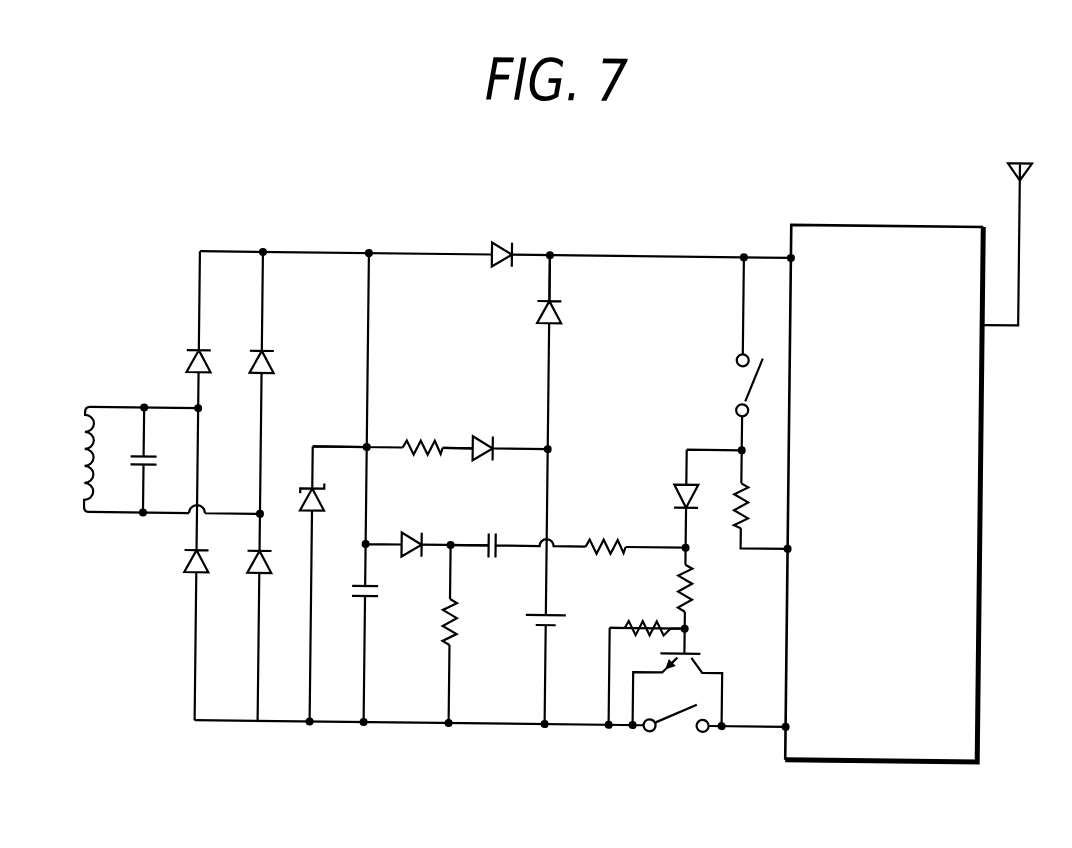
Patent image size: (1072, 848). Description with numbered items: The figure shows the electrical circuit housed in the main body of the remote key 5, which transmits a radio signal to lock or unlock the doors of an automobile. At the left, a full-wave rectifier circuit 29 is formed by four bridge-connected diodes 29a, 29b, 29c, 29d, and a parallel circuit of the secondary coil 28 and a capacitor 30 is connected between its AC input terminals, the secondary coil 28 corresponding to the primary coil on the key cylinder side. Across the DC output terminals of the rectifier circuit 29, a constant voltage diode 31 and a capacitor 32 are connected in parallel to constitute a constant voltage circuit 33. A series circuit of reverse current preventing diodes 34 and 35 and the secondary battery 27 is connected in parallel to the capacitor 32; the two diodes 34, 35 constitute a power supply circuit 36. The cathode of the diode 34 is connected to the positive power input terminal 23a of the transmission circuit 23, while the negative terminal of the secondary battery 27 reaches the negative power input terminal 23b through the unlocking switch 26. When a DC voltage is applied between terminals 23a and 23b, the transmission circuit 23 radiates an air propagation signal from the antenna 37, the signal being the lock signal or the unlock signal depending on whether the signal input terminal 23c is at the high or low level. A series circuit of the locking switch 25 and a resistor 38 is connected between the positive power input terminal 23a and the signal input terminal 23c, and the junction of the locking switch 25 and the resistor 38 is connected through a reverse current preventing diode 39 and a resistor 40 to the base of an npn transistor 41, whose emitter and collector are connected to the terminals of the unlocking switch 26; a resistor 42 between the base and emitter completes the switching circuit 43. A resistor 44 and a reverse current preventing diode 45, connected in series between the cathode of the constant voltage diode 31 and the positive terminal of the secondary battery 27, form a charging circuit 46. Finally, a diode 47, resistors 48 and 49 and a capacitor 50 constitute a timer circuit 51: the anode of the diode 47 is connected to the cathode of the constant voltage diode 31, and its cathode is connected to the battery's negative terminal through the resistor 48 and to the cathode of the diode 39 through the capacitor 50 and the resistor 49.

The remote key 5 is at (432, 733).
The transmission circuit 23 is at (872, 494).
The positive power input terminal 23a is at (789, 255).
The negative power input terminal 23b is at (789, 726).
The signal input terminal 23c is at (789, 548).
The locking switch 25 is at (747, 383).
The unlocking switch 26 is at (680, 708).
The secondary battery 27 is at (560, 623).
The secondary coil 28 is at (81, 492).
The full-wave rectifier circuit 29 is at (221, 443).
The diode 29a is at (190, 366).
The diode 29b is at (268, 366).
The diode 29c is at (185, 563).
The diode 29d is at (248, 563).
The capacitor 30 is at (128, 463).
The constant voltage diode 31 is at (305, 487).
The capacitor 32 is at (348, 593).
The constant voltage circuit 33 is at (333, 438).
The reverse current preventing diode 34 is at (495, 240).
The reverse current preventing diode 35 is at (562, 311).
The power supply circuit 36 is at (533, 240).
The antenna 37 is at (1027, 162).
The resistor 38 is at (731, 502).
The reverse current preventing diode 39 is at (687, 482).
The resistor 40 is at (683, 585).
The npn transistor 41 is at (688, 668).
The resistor 42 is at (647, 632).
The switching circuit 43 is at (705, 626).
The resistor 44 is at (427, 438).
The reverse current preventing diode 45 is at (487, 437).
The charging circuit 46 is at (458, 463).
The diode 47 is at (413, 560).
The resistor 48 is at (445, 628).
The resistor 49 is at (608, 541).
The capacitor 50 is at (497, 525).
The timer circuit 51 is at (478, 585).